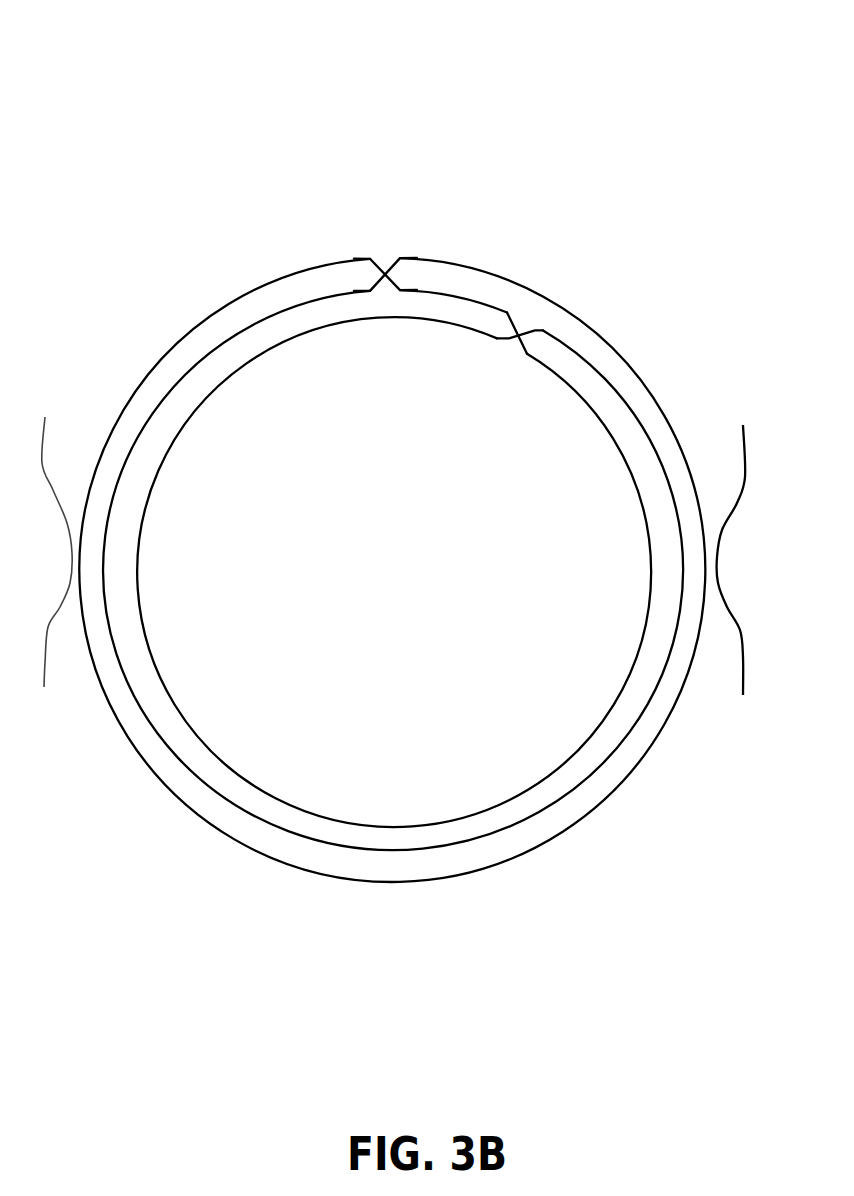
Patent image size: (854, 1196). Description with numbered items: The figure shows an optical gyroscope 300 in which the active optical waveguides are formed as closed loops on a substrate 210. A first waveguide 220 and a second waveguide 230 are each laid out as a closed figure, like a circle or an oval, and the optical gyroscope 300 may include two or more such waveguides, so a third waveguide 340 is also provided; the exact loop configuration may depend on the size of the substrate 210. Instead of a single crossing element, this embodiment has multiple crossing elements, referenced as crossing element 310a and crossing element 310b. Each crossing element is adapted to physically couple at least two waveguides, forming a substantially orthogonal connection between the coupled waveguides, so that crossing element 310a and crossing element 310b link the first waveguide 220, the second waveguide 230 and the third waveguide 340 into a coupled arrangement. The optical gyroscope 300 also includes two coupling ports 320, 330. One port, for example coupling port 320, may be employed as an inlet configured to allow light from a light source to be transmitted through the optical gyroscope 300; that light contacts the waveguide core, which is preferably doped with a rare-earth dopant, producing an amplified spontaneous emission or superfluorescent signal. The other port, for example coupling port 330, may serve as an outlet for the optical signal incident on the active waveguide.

The optical gyroscope 300 is at (111, 42).
The substrate 210 is at (392, 570).
The first waveguide 220 is at (394, 572).
The second waveguide 230 is at (393, 570).
The crossing element 310a is at (394, 274).
The crossing element 310b is at (502, 331).
The coupling port 320 is at (55, 536).
The coupling port 330 is at (731, 547).
The third waveguide 340 is at (575, 354).